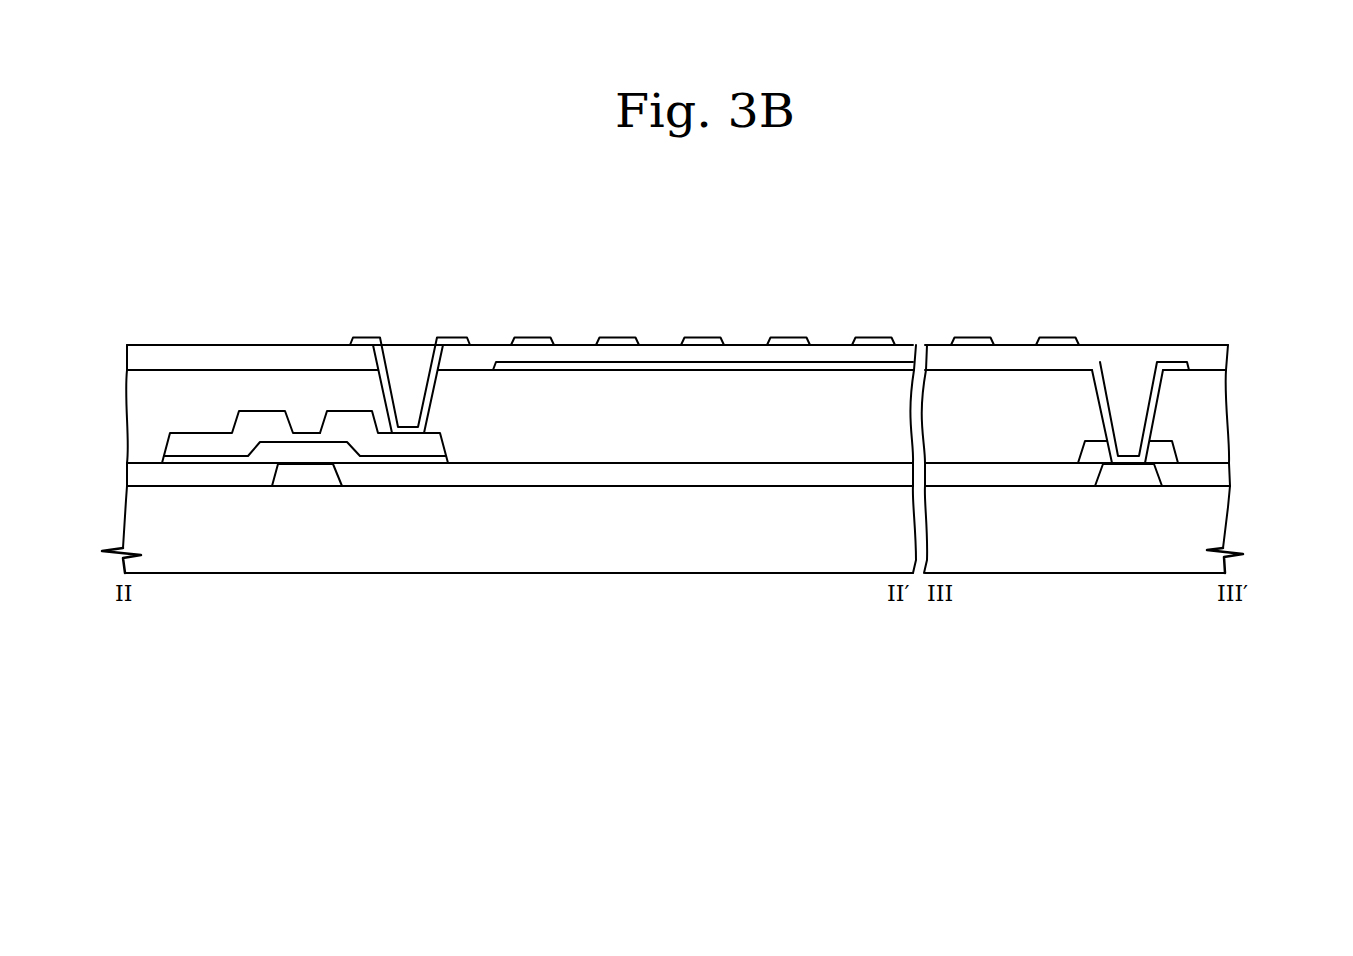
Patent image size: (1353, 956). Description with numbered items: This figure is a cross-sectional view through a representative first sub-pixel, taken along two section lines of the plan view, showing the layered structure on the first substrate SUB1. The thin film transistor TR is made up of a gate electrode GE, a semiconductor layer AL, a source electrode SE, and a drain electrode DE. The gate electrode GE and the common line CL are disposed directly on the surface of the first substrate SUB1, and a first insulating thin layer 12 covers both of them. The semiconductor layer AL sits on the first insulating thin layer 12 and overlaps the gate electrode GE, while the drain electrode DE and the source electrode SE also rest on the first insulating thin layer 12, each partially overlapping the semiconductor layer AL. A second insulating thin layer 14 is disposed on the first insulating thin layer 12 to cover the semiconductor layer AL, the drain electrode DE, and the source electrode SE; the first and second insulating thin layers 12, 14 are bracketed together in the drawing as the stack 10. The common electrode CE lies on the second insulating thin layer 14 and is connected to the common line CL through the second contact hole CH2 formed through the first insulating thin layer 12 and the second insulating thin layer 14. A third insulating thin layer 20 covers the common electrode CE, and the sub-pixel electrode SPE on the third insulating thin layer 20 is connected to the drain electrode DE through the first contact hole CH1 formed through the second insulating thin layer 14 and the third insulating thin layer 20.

The first substrate SUB1 is at (1208, 521).
The first insulating thin layer 12 is at (1216, 476).
The second insulating thin layer 14 is at (1208, 416).
The insulating layer stack 10 is at (1297, 407).
The third insulating thin layer 20 is at (1216, 360).
The first contact hole CH1 is at (427, 398).
The second contact hole CH2 is at (1103, 417).
The sub-pixel electrode SPE is at (704, 338).
The common electrode CE is at (820, 362).
The gate electrode GE is at (307, 480).
The semiconductor layer AL is at (367, 459).
The source electrode SE is at (226, 446).
The drain electrode DE is at (409, 446).
The thin film transistor TR is at (438, 638).
The common line CL is at (1130, 480).